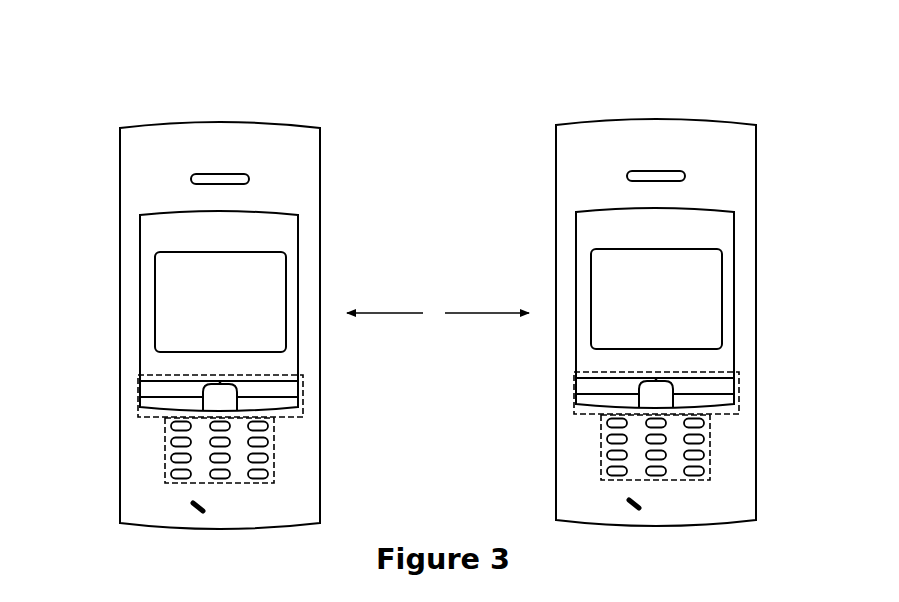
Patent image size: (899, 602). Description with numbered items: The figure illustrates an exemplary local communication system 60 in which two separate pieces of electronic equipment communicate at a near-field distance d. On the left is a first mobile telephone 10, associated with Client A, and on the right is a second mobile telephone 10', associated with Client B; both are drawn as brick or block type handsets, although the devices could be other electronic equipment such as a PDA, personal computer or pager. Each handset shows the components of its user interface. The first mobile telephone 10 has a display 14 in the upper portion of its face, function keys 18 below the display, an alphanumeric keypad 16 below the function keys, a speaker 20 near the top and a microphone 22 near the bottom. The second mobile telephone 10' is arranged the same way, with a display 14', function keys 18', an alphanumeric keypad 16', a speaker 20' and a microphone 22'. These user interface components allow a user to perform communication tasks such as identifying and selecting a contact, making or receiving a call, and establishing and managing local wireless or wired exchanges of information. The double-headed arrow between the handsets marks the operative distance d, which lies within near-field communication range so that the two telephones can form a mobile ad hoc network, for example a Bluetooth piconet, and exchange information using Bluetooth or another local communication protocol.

The communication system 60 is at (426, 48).
The first mobile telephone 10 is at (181, 325).
The display 14 is at (220, 302).
The alphanumeric keypad 16 is at (172, 450).
The function keys 18 is at (184, 390).
The speaker 20 is at (220, 164).
The microphone 22 is at (220, 503).
The second mobile telephone 10' is at (617, 322).
The display 14' is at (656, 299).
The alphanumeric keypad 16' is at (608, 447).
The function keys 18' is at (620, 387).
The speaker 20' is at (656, 161).
The microphone 22' is at (658, 500).